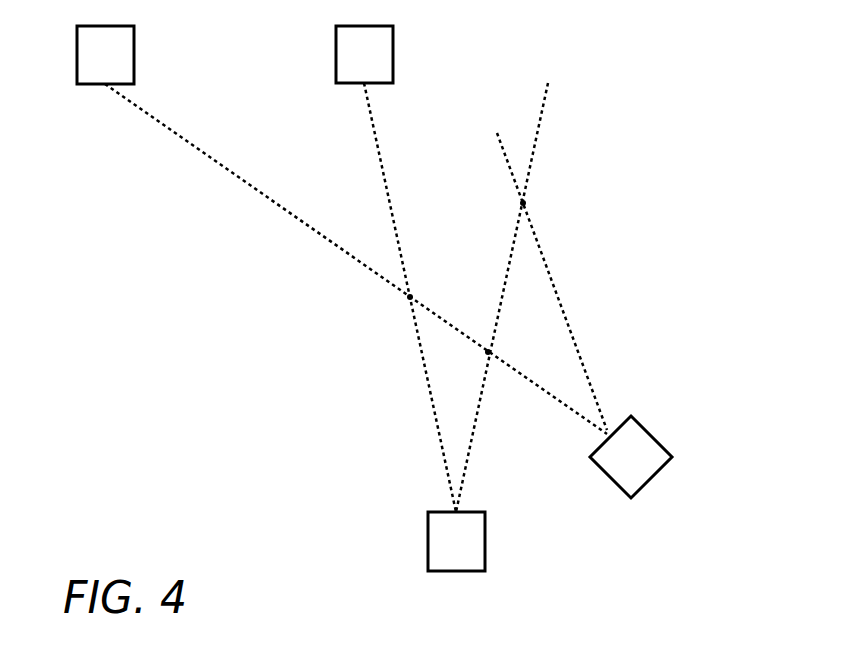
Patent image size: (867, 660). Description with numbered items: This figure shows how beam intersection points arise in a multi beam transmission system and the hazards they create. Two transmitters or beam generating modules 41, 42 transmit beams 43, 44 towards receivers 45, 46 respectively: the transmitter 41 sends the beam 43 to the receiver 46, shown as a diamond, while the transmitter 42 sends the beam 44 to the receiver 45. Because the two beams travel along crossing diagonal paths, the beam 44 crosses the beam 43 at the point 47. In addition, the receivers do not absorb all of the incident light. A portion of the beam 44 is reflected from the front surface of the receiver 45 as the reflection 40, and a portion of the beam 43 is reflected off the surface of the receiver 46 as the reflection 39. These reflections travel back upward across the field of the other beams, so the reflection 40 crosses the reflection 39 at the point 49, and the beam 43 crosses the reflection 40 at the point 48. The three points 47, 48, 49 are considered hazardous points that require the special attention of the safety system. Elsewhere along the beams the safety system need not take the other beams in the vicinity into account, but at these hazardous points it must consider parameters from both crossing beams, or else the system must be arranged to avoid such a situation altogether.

The reflection 39 is at (500, 150).
The reflection 40 is at (540, 113).
The transmitter 41 is at (134, 58).
The transmitter 42 is at (393, 56).
The beam 43 is at (163, 125).
The beam 44 is at (375, 135).
The receiver 45 is at (428, 545).
The receiver 46 is at (652, 434).
The point 47 is at (408, 298).
The point 48 is at (488, 352).
The point 49 is at (523, 204).